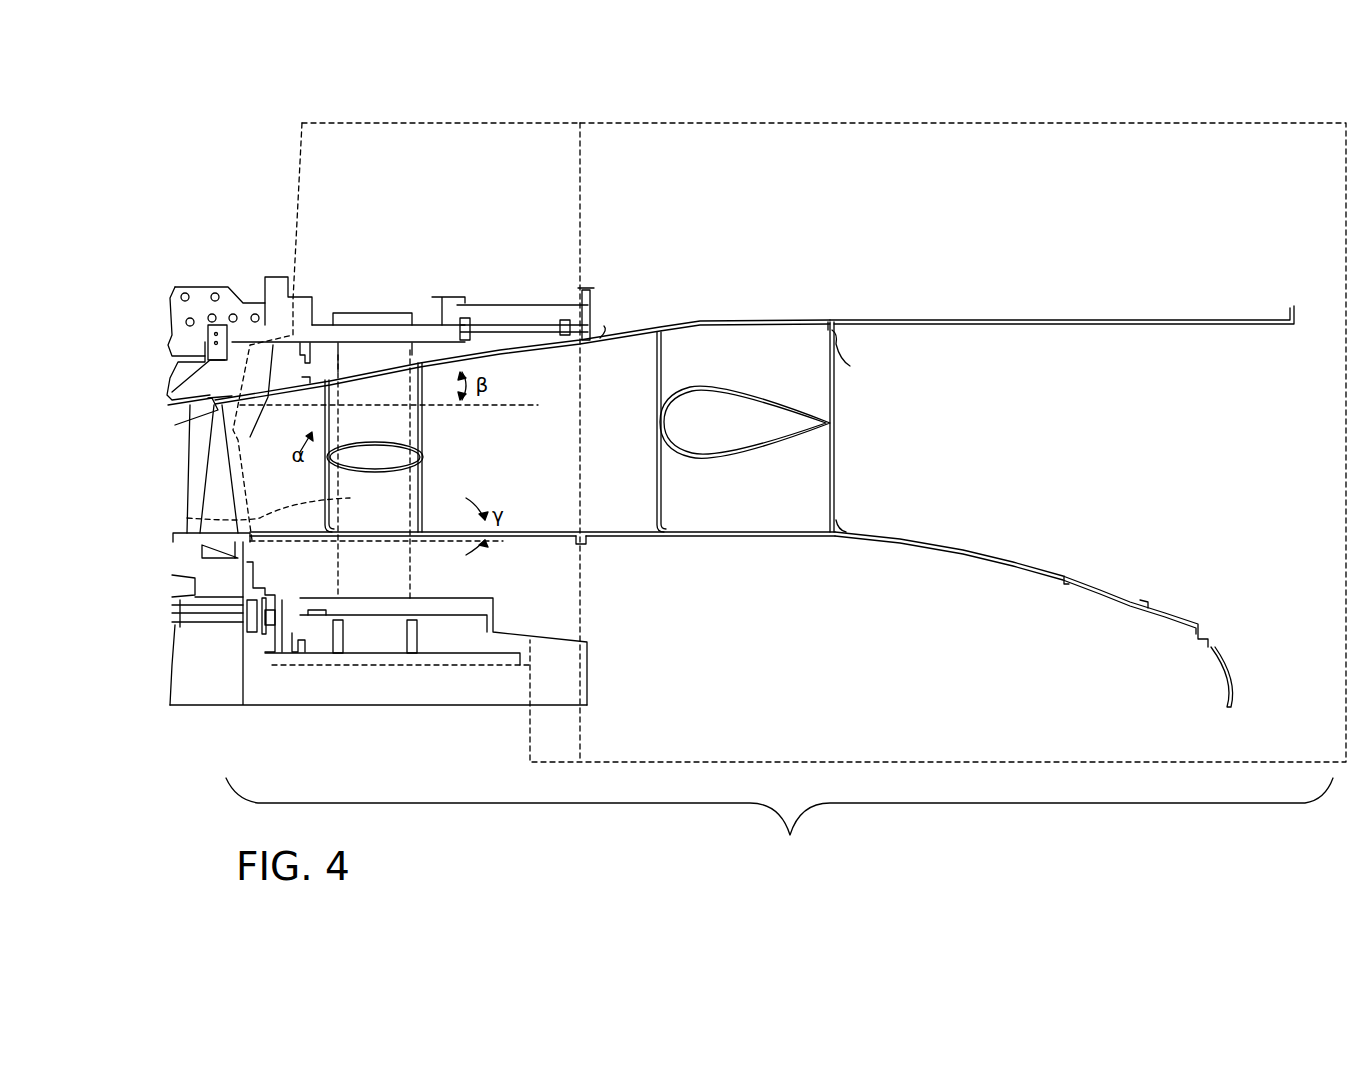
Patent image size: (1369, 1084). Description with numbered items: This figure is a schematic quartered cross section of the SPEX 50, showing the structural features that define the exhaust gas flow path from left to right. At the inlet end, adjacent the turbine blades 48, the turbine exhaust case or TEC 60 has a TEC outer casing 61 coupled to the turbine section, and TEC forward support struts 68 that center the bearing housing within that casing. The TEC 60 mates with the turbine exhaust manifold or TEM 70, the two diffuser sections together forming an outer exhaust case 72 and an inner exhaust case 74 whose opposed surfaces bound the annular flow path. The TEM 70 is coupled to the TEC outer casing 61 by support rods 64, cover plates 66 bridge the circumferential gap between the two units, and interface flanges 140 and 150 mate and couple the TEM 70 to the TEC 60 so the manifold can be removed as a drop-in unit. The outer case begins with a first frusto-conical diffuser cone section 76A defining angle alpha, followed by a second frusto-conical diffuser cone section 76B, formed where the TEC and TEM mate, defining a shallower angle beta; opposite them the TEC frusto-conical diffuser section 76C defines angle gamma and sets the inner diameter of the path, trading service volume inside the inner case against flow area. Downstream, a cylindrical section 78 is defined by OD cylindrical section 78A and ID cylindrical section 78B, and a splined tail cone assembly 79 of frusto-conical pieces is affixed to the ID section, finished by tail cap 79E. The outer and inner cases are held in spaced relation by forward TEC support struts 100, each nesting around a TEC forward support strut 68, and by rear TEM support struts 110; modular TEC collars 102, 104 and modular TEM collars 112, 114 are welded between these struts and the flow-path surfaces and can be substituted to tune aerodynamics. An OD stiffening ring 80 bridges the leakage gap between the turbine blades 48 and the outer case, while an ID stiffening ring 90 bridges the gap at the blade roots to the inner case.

The turbine blades 48 is at (217, 467).
The SPEX 50 is at (788, 845).
The turbine exhaust case (TEC) 60 is at (425, 108).
The TEC outer casing 61 is at (318, 323).
The support rods 64 is at (538, 305).
The cover plates 66 is at (572, 343).
The TEC forward support struts 68 is at (187, 518).
The turbine exhaust manifold (TEM) 70 is at (835, 108).
The outer exhaust case 72 is at (820, 318).
The inner exhaust case 74 is at (615, 523).
The first frusto-conical diffuser cone section 76A is at (290, 330).
The second frusto-conical diffuser cone section 76B is at (462, 308).
The TEC frusto-conical diffuser section 76C is at (436, 520).
The cylindrical section 78 is at (640, 340).
The OD cylindrical section 78A is at (1032, 324).
The ID cylindrical section 78B is at (752, 531).
The tail cone assembly 79 is at (1100, 578).
The tail cap 79E is at (1232, 670).
The OD stiffening ring 80 is at (250, 310).
The ID stiffening ring 90 is at (260, 540).
The TEC support struts 100 is at (430, 460).
The modular TEC collar 102 is at (308, 393).
The modular TEC collar 104 is at (185, 562).
The TEM support struts 110 is at (812, 455).
The modular TEM collar 112 is at (850, 366).
The modular TEM collar 114 is at (842, 522).
The interface flange 140 is at (603, 330).
The interface flange 150 is at (578, 546).